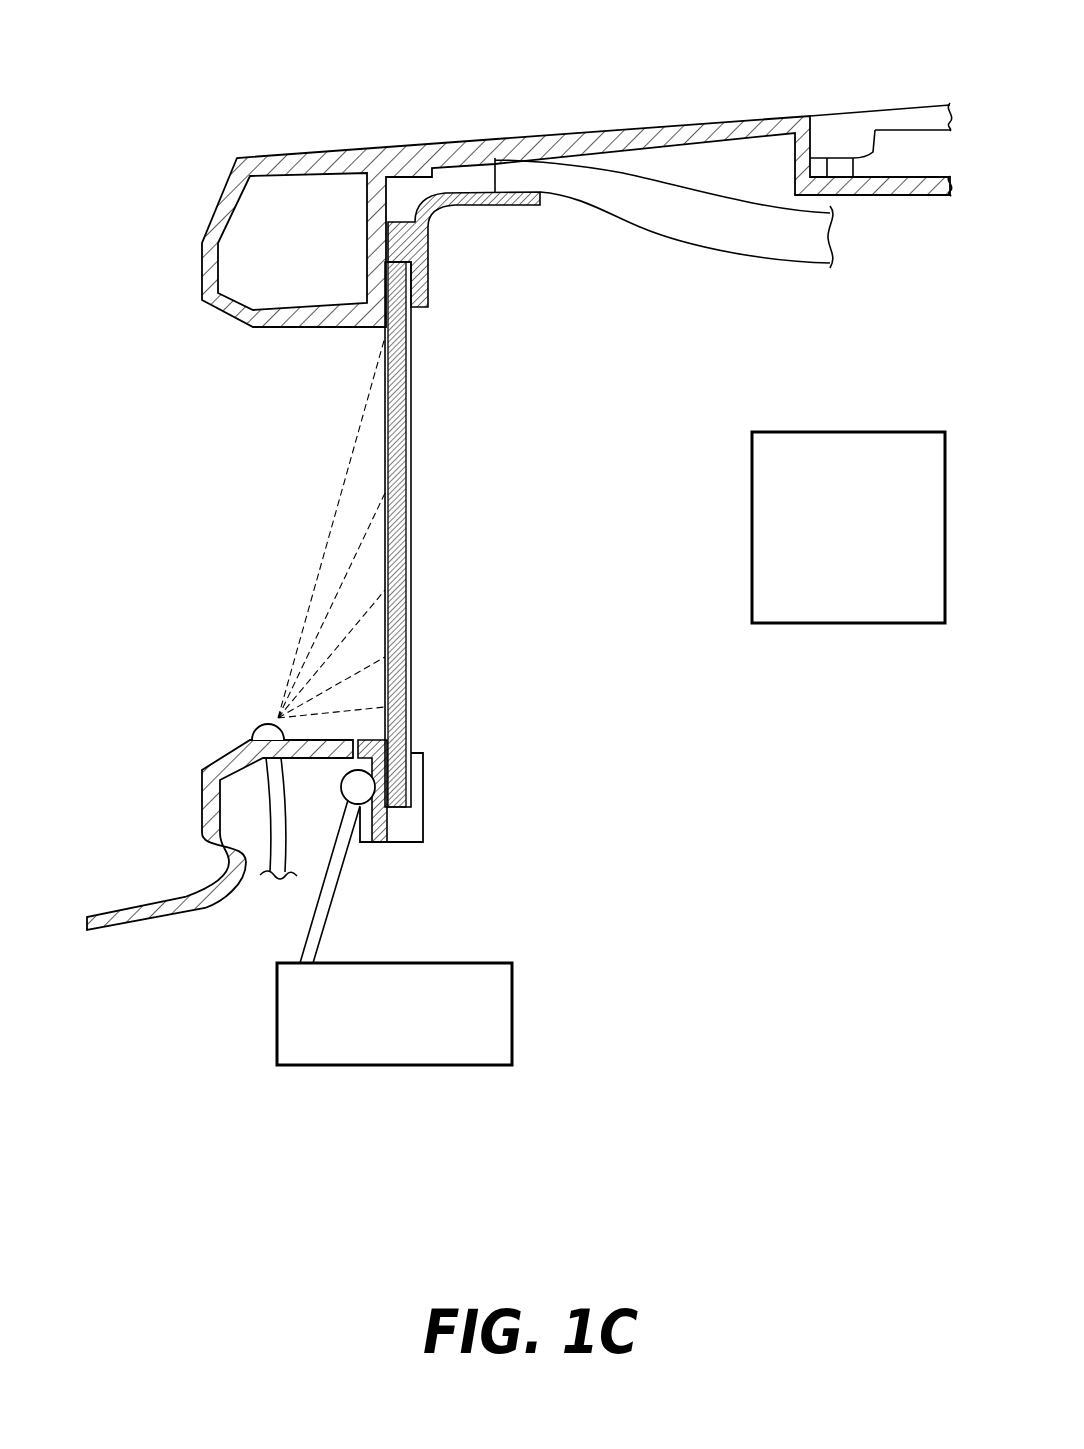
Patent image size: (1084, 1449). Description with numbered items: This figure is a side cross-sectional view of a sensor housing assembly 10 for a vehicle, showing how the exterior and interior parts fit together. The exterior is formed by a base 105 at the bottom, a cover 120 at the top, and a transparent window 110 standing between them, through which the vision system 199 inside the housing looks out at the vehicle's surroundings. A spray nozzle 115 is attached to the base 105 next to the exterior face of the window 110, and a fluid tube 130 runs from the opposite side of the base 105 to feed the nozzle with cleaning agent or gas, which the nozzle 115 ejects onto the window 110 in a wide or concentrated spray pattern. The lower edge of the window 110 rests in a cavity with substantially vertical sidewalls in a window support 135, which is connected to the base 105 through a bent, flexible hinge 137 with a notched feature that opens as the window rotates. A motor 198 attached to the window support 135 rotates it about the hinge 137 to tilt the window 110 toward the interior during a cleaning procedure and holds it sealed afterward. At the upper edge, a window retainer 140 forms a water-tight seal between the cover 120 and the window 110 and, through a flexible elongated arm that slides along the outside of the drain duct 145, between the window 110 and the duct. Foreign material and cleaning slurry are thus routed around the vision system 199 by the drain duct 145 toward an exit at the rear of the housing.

The vehicle camera assembly 10 is at (112, 62).
The base 105 is at (125, 906).
The window 110 is at (407, 423).
The spray nozzle 115 is at (252, 723).
The cover 120 is at (337, 154).
The fluid tube 130 is at (262, 874).
The window support 135 is at (423, 842).
The hinge 137 is at (410, 748).
The window retainer 140 is at (492, 206).
The drain duct 145 is at (703, 247).
The motor 198 is at (394, 1014).
The vision system 199 is at (848, 527).